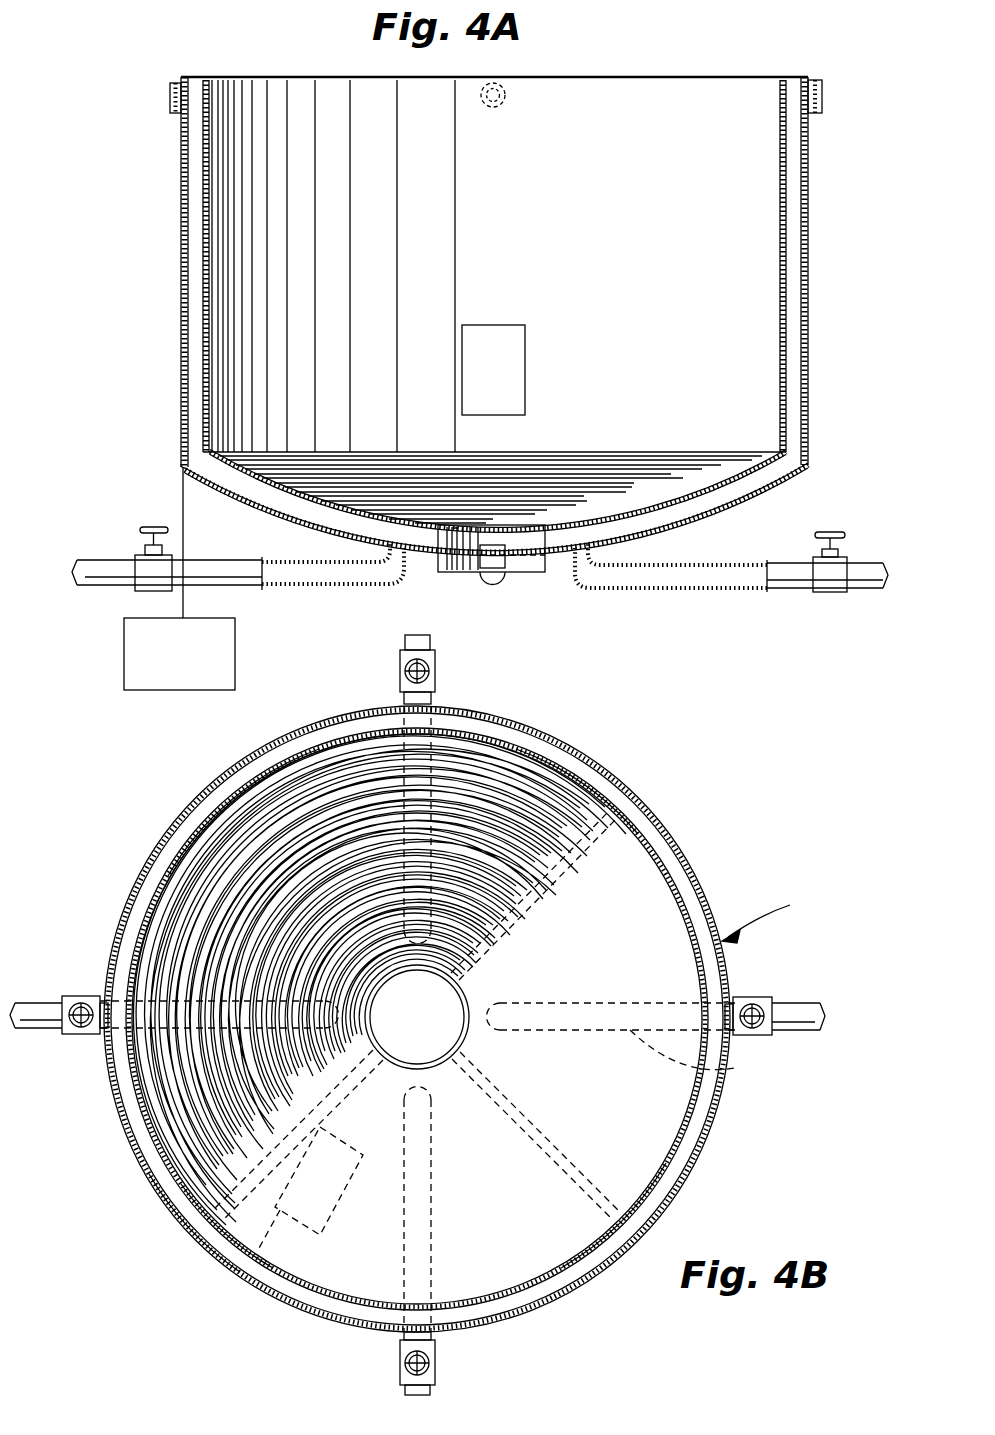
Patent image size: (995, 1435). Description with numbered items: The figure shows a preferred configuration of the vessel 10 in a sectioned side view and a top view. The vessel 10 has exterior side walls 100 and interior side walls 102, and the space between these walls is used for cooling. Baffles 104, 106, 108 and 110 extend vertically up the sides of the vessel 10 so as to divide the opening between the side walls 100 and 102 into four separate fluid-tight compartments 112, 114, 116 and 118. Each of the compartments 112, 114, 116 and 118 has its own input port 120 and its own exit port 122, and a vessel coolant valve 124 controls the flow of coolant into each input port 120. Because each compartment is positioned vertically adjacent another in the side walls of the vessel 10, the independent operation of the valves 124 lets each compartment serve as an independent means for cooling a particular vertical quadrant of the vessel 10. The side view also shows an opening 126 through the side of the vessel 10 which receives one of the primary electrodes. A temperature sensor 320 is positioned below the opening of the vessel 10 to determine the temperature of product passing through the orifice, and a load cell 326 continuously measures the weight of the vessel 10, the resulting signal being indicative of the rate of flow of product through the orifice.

In FIG. 4A, the vessel 10 is at (181, 221).
In FIG. 4A, the exterior side walls 100 is at (184, 313).
In FIG. 4A, the interior side walls 102 is at (230, 350).
In FIG. 4B, the baffle 104 is at (202, 799).
In FIG. 4B, the baffle 106 is at (633, 803).
In FIG. 4B, the baffle 108 is at (656, 1228).
In FIG. 4B, the baffle 110 is at (194, 1233).
In FIG. 4B, the compartment 112 is at (546, 744).
In FIG. 4A, the compartment 114 is at (796, 270).
In FIG. 4B, the compartment 114 is at (690, 880).
In FIG. 4B, the compartment 116 is at (540, 1299).
In FIG. 4A, the compartment 118 is at (194, 266).
In FIG. 4B, the compartment 118 is at (162, 1173).
In FIG. 4A, the input port 120 is at (268, 586).
In FIG. 4B, the input port 120 is at (432, 778).
In FIG. 4A, the exit port 122 is at (173, 107).
In FIG. 4B, the exit port 122 is at (430, 694).
In FIG. 4A, the vessel coolant valve 124 is at (137, 590).
In FIG. 4B, the vessel coolant valve 124 is at (437, 668).
In FIG. 4A, the opening 126 is at (527, 386).
In FIG. 4B, the temperature sensor 320 is at (250, 1282).
In FIG. 4A, the load cell 326 is at (126, 666).